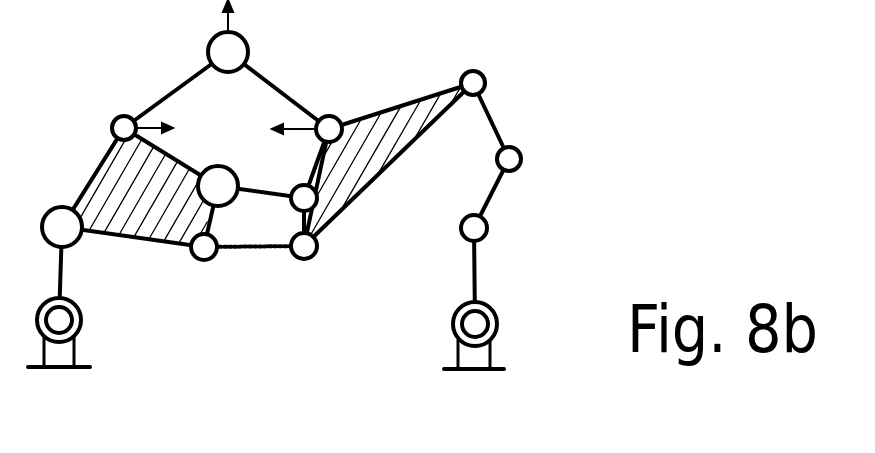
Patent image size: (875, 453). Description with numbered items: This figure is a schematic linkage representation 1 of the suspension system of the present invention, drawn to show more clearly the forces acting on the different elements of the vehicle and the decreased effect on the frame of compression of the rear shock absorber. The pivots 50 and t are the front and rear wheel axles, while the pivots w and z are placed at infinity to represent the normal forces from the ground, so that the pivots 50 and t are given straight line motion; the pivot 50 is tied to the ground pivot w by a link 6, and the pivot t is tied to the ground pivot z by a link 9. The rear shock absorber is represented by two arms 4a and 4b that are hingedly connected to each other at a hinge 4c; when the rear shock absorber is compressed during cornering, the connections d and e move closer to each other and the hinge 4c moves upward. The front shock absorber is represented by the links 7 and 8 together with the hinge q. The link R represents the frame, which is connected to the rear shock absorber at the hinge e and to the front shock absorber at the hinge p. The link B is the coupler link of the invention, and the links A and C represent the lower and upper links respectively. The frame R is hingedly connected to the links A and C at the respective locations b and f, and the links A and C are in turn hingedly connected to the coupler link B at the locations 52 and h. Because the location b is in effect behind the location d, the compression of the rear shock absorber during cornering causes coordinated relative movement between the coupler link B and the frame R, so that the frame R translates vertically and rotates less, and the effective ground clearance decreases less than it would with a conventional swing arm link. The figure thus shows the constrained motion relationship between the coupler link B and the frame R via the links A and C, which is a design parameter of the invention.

The mechanism 1 is at (276, 367).
The arm 4a is at (176, 90).
The arm 4b is at (278, 90).
The hinge 4c is at (228, 52).
The pivot 50 is at (62, 227).
The location 52 is at (218, 186).
The link 6 is at (69, 273).
The link 7 is at (491, 121).
The link 8 is at (491, 193).
The link 9 is at (482, 276).
The lower link A is at (261, 180).
The coupler link B is at (140, 187).
The upper link C is at (254, 233).
The frame R is at (388, 164).
The location b is at (304, 198).
The connection d is at (124, 128).
The hinge e is at (329, 129).
The location f is at (304, 246).
The location h is at (204, 247).
The hinge p is at (473, 83).
The hinge q is at (509, 159).
The pivot t is at (474, 228).
The pivot w is at (59, 332).
The pivot z is at (474, 335).